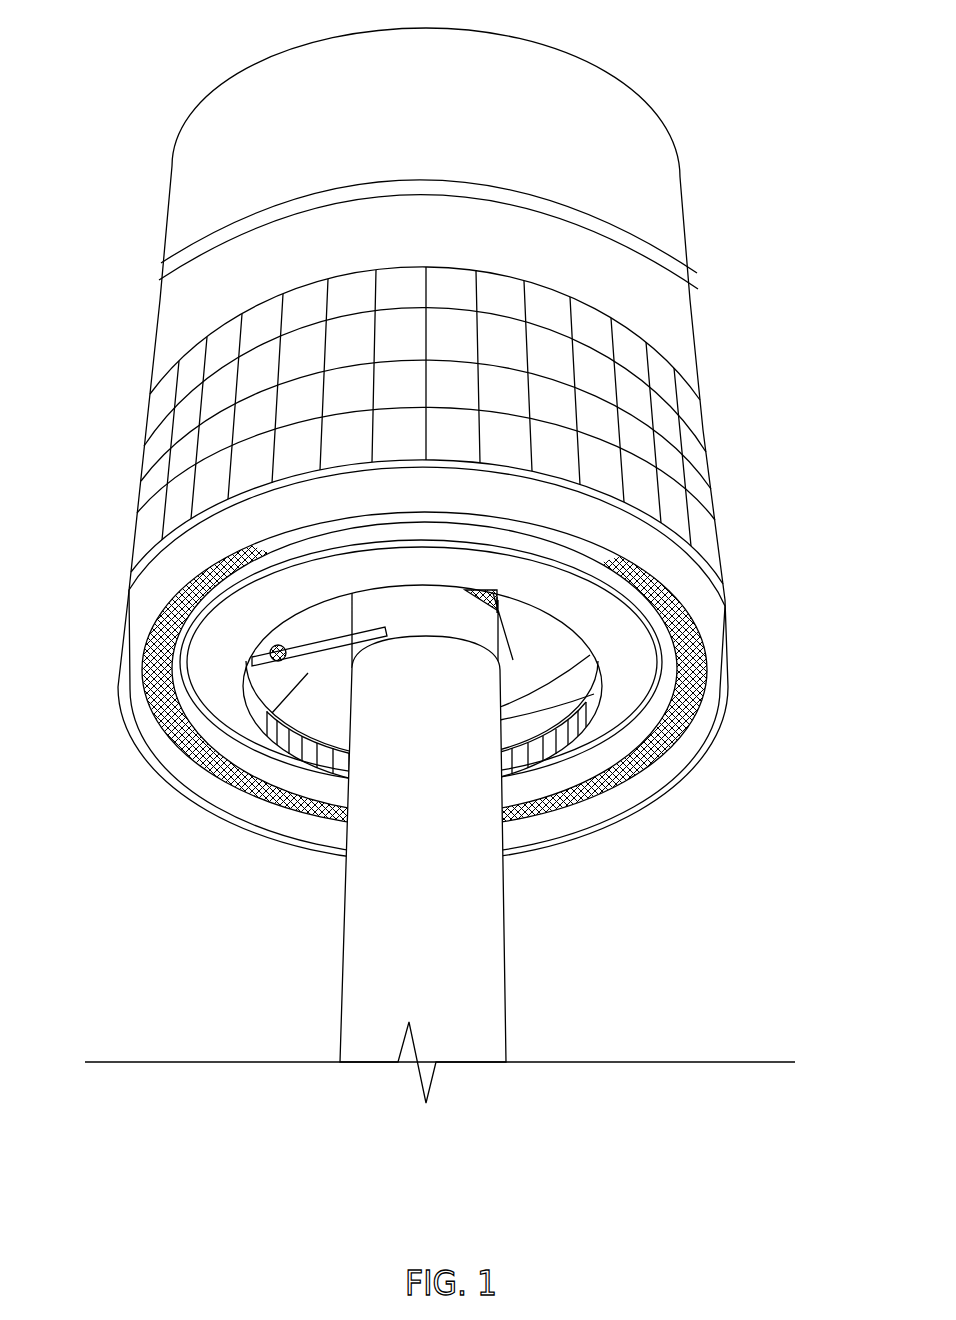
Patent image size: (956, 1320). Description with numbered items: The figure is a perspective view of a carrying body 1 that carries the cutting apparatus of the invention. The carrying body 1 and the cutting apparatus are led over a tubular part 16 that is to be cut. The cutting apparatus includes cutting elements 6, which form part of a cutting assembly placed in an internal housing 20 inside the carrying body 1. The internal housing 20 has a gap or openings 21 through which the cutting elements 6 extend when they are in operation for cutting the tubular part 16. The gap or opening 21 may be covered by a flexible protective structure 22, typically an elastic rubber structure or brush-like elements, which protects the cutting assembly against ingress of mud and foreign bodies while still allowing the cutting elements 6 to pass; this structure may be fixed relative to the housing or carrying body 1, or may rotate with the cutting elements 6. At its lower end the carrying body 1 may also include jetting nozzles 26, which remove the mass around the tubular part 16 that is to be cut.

The carrying body 1 is at (703, 433).
The cutting elements 6 is at (292, 670).
The tubular part 16 is at (507, 987).
The internal housing 20 is at (618, 690).
The gap or openings 21 is at (305, 753).
The flexible protective structure 22 is at (532, 753).
The jetting nozzles 26 is at (233, 780).